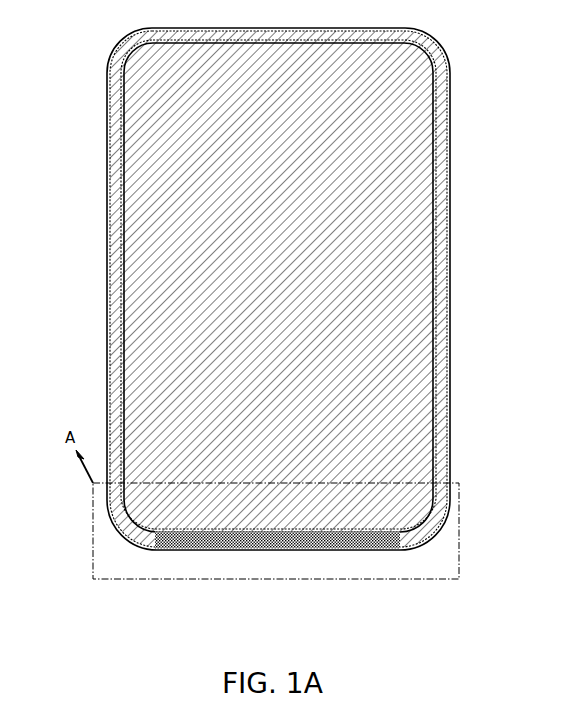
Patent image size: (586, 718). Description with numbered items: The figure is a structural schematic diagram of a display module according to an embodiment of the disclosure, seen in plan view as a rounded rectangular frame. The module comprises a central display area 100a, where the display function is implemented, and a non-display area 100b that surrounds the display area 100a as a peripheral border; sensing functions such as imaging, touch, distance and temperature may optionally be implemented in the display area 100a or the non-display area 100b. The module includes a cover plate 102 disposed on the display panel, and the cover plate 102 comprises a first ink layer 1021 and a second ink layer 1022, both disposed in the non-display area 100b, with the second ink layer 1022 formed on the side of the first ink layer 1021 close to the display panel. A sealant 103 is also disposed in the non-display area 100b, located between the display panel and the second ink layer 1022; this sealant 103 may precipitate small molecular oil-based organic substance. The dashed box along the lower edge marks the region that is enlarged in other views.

The display area 100a is at (129, 157).
The non-display area 100b is at (108, 190).
The cover plate 102 is at (279, 291).
The first ink layer 1021 is at (118, 275).
The second ink layer 1022 is at (445, 497).
The sealant 103 is at (400, 549).